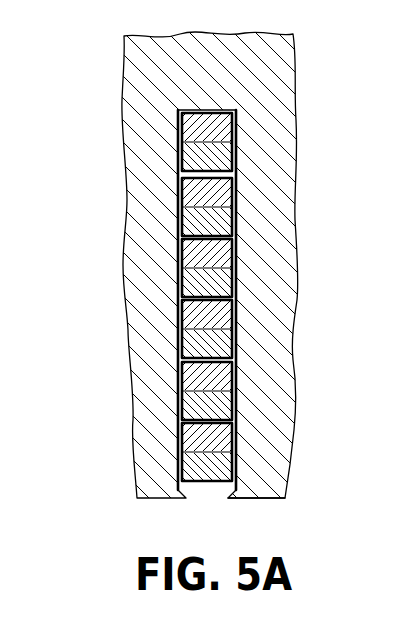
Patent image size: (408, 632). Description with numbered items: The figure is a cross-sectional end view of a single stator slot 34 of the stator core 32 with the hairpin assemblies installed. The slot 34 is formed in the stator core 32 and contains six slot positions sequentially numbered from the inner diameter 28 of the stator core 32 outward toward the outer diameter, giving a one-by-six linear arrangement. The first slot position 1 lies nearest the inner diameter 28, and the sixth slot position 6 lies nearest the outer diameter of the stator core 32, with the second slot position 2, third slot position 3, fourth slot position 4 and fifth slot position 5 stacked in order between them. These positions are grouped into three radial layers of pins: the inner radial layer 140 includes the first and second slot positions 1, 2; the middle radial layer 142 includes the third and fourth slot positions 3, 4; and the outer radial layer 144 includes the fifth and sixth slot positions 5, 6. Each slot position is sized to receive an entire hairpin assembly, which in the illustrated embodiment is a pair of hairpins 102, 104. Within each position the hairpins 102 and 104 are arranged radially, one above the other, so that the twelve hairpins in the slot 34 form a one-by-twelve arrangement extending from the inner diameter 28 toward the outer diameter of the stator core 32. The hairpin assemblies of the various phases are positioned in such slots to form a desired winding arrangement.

The first slot position 1 is at (167, 481).
The second slot position 2 is at (163, 420).
The third slot position 3 is at (165, 358).
The fourth slot position 4 is at (158, 297).
The fifth slot position 5 is at (165, 236).
The sixth slot position 6 is at (155, 171).
The inner diameter 28 is at (257, 503).
The stator core 32 is at (278, 277).
The slot 34 is at (218, 110).
The hairpin 102 is at (220, 137).
The hairpin 104 is at (222, 153).
The inner radial layer 140 is at (84, 394).
The middle radial layer 142 is at (82, 270).
The outer radial layer 144 is at (84, 150).